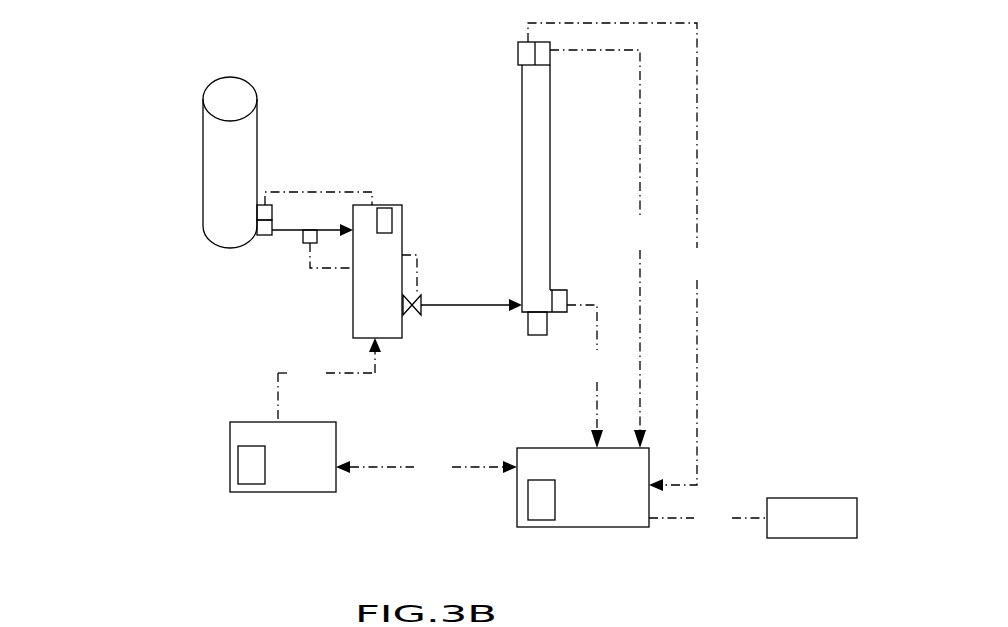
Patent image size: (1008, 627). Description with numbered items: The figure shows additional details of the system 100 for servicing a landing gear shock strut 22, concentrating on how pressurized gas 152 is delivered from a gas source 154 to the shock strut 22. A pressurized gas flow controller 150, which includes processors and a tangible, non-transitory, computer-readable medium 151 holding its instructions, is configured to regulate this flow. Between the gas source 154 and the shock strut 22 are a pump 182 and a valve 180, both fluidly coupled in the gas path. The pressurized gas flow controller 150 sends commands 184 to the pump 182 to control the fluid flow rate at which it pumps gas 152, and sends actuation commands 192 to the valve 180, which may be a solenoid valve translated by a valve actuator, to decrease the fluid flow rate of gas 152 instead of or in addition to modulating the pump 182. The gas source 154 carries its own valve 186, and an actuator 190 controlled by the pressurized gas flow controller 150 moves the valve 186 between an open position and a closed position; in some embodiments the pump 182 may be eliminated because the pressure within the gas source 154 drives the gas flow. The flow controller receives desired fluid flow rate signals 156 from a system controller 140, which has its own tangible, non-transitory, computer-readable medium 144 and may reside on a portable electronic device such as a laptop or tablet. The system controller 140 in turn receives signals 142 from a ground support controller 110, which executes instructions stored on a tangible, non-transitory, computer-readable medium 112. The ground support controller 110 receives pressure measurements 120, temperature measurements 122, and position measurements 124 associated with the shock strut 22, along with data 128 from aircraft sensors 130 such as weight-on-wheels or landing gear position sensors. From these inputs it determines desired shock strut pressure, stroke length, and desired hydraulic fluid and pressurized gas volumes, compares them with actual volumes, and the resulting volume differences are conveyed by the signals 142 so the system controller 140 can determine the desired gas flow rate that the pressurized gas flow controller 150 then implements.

The system 100 is at (134, 93).
The gas source 154 is at (212, 174).
The valve 186 is at (264, 237).
The actuator 190 is at (265, 200).
The pressurized gas 152 is at (290, 232).
The pump 182 is at (307, 244).
The commands 184 is at (331, 270).
The pressurized gas flow controller 150 is at (359, 281).
The tangible, non-transitory, computer-readable medium 151 is at (383, 214).
The desired fluid flow rate signals 156 is at (329, 380).
The actuation commands 192 is at (418, 270).
The valve 180 is at (408, 310).
The shock strut 22 is at (508, 110).
The pressure measurements 120 is at (603, 249).
The temperature measurements 122 is at (623, 257).
The position measurements 124 is at (587, 376).
The ground support controller 110 is at (571, 499).
The tangible, non-transitory, computer-readable medium 112 is at (540, 507).
The data 128 is at (708, 518).
The aircraft sensors 130 is at (792, 533).
The system controller 140 is at (271, 469).
The tangible, non-transitory, computer-readable medium 144 is at (245, 465).
The signals 142 is at (426, 467).